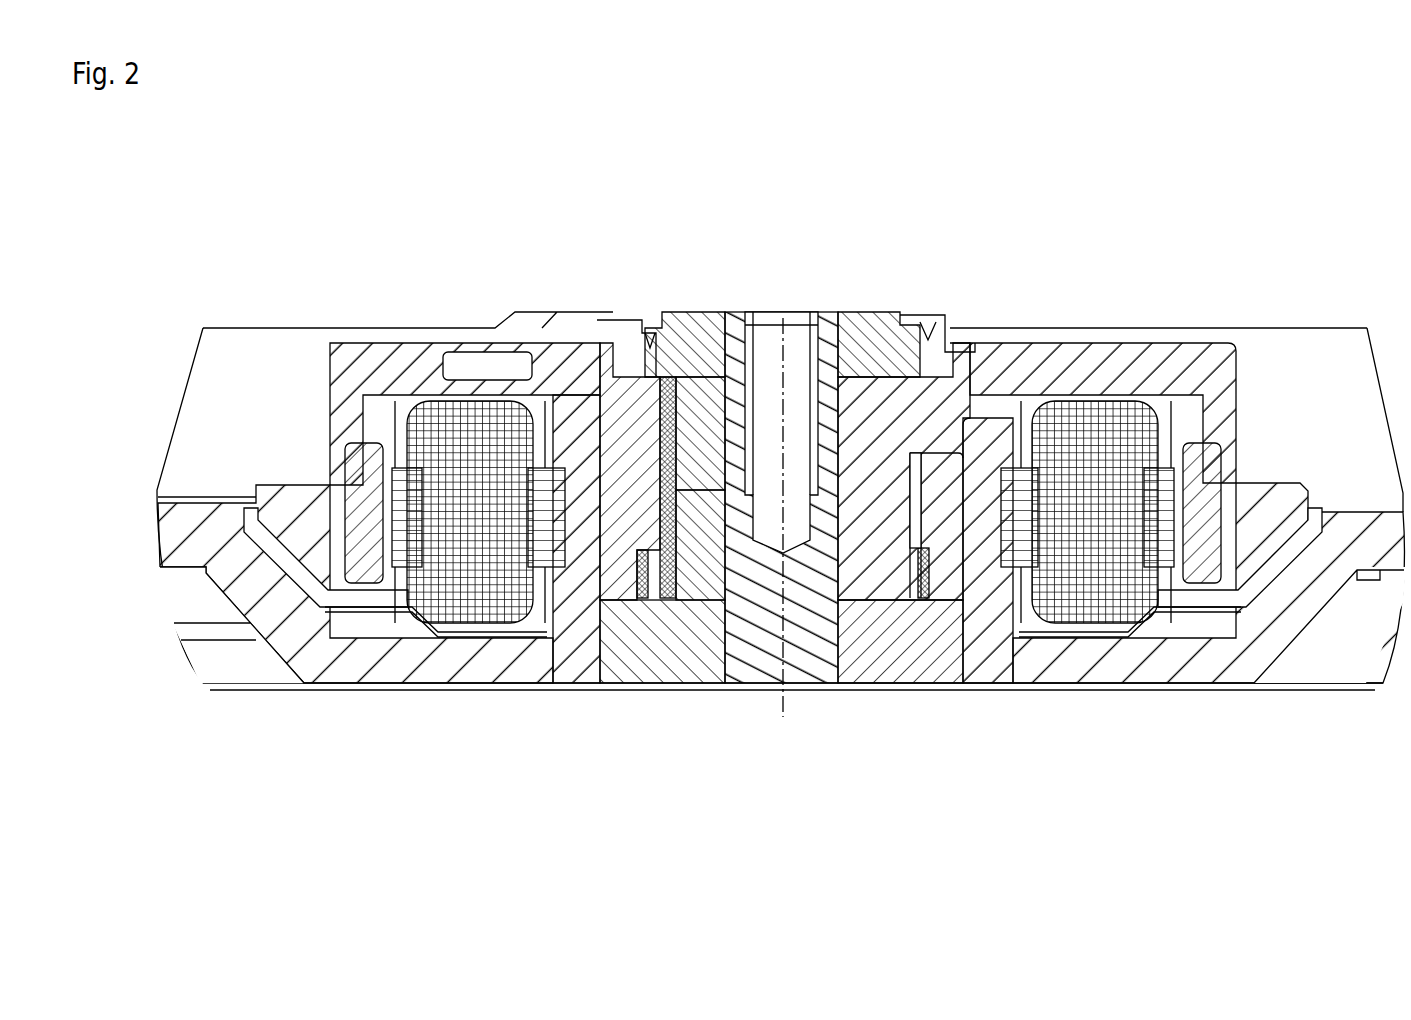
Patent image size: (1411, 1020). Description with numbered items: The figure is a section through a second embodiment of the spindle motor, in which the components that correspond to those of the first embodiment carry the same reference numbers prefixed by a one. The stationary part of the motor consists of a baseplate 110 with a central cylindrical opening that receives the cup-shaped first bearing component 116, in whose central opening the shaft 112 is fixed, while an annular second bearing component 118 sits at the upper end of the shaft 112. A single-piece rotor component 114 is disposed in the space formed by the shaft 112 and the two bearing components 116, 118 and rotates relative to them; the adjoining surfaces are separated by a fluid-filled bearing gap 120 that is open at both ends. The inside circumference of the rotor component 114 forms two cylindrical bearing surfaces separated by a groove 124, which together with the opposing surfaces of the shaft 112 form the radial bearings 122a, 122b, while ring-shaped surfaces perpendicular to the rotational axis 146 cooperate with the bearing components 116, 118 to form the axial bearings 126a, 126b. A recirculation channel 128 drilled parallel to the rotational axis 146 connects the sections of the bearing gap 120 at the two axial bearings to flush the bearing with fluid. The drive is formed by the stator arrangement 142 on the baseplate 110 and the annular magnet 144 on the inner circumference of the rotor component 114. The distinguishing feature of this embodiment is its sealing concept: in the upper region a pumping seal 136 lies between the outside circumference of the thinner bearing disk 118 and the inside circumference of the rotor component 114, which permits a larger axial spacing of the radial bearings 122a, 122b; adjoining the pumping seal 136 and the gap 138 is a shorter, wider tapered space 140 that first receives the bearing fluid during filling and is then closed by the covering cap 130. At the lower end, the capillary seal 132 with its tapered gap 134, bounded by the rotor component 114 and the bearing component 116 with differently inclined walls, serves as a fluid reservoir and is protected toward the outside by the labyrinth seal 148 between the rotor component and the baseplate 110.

The baseplate 110 is at (1173, 660).
The shaft 112 is at (807, 650).
The rotor component 114 is at (1170, 360).
The bearing component 116 is at (948, 665).
The bearing component 118 is at (705, 390).
The bearing gap 120 is at (720, 420).
The radial bearing 122a is at (735, 410).
The radial bearing 122b is at (776, 590).
The groove 124 is at (655, 640).
The axial bearing 126a is at (720, 360).
The axial bearing 126b is at (695, 590).
The recirculation channel 128 is at (513, 343).
The covering cap 130 is at (613, 328).
The capillary seal 132 is at (975, 640).
The gap 134 is at (918, 483).
The pumping seal 136 is at (937, 447).
The gap 138 is at (880, 352).
The space 140 is at (932, 323).
The stator arrangement 142 is at (1080, 600).
The magnet 144 is at (1200, 530).
The rotational axis 146 is at (785, 318).
The labyrinth seal 148 is at (997, 440).